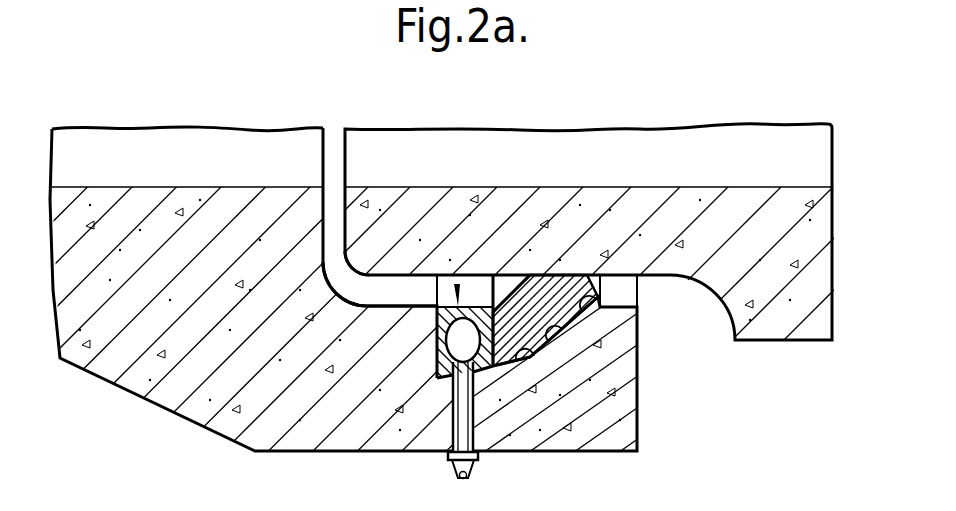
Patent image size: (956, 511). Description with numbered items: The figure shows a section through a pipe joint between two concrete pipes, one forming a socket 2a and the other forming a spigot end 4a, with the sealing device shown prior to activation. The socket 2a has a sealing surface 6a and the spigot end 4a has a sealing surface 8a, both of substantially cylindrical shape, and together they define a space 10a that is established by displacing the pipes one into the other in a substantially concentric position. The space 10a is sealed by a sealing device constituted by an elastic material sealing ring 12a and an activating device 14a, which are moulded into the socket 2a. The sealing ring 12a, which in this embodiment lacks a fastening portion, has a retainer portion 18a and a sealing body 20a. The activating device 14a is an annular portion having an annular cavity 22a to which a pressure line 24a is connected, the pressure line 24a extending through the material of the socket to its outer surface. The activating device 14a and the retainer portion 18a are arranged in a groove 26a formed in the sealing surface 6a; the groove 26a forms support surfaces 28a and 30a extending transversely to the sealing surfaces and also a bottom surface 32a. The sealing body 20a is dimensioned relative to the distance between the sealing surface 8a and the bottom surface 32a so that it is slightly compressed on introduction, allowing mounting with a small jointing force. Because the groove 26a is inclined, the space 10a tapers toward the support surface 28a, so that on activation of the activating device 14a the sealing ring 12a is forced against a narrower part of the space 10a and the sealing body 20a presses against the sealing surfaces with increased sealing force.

The socket 2a is at (153, 367).
The spigot end 4a is at (745, 160).
The sealing surface 6a is at (416, 277).
The sealing surface 8a is at (421, 273).
The space 10a is at (475, 290).
The sealing ring 12a is at (520, 322).
The activating device 14a is at (457, 284).
The retainer portion 18a is at (516, 362).
The sealing body 20a is at (552, 290).
The annular cavity 22a is at (446, 356).
The pressure line 24a is at (450, 405).
The groove 26a is at (592, 340).
The support surface 28a is at (600, 315).
The support surface 30a is at (441, 335).
The bottom surface 32a is at (556, 345).